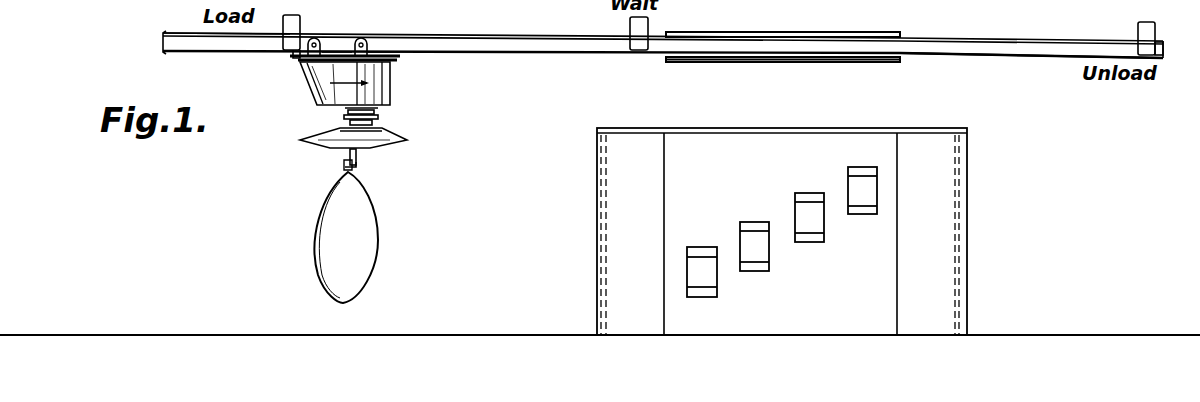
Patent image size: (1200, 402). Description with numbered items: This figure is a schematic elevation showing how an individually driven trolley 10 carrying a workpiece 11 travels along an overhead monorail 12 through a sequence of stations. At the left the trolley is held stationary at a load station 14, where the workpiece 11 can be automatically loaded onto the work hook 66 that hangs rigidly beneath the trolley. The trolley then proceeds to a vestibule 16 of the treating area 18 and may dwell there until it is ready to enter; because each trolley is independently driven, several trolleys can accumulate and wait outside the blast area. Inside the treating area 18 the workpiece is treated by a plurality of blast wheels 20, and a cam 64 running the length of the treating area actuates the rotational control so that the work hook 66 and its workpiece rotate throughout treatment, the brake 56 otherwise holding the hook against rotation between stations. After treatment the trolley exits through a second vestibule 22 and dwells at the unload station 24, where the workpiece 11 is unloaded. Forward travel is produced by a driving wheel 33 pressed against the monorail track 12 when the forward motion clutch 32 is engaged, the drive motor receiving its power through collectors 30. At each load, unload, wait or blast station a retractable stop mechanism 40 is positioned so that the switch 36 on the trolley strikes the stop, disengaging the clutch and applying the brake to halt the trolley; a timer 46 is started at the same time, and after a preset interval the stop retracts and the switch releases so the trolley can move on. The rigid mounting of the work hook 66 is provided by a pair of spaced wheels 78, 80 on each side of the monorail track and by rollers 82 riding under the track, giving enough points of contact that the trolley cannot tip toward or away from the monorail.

The trolley 10 is at (400, 97).
The workpiece 11 is at (360, 212).
The monorail 12 is at (663, 57).
The load station 14 is at (272, 54).
The vestibule 16 is at (618, 222).
The treating area 18 is at (813, 126).
The blast wheels 20 is at (855, 212).
The vestibule 22 is at (940, 213).
The unload station 24 is at (1136, 62).
The collectors 30 is at (97, 4).
The forward motion clutch 32 is at (142, 4).
The driving wheel 33 is at (340, 53).
The switch 36 is at (290, 53).
The retractable stop mechanism 40 is at (305, 28).
The timer 46 is at (1160, 30).
The brake 56 is at (783, 31).
The cam 64 is at (818, 58).
The work hook 66 is at (375, 108).
The spaced wheels 78 is at (367, 50).
The spaced wheels 80 is at (300, 48).
The rollers 82 is at (386, 54).